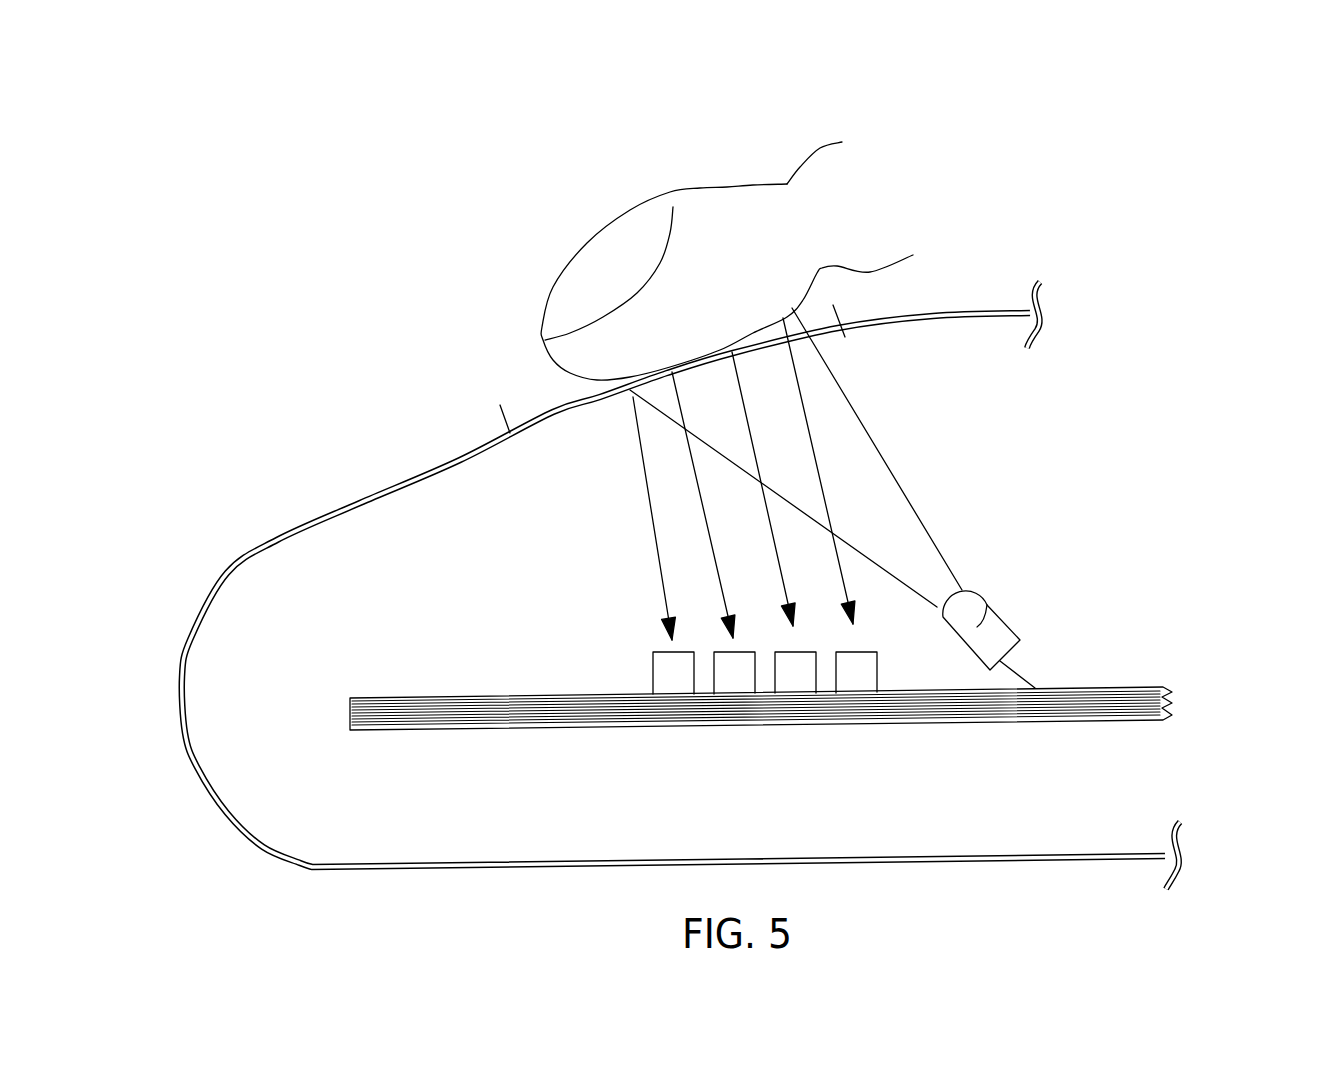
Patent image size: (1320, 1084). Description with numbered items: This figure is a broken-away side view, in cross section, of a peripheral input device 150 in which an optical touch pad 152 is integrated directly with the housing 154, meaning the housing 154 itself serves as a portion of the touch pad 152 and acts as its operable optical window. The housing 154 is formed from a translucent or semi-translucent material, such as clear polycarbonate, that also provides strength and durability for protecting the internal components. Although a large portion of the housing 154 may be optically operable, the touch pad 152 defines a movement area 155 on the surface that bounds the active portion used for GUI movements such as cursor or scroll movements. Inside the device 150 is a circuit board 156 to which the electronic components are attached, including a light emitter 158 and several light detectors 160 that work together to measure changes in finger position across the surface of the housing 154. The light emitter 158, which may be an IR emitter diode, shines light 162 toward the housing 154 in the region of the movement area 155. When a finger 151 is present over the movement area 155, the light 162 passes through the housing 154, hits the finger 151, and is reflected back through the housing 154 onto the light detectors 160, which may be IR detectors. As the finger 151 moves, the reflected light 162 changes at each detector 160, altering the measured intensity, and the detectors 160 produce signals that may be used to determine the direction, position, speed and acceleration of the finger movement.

The peripheral input device 150 is at (395, 260).
The finger 151 is at (731, 205).
The optical touch pad 152 is at (1019, 468).
The housing 154 is at (277, 540).
The movement area 155 is at (503, 422).
The circuit board 156 is at (1088, 688).
The light emitter 158 is at (997, 596).
The light detectors 160 is at (675, 672).
The light 162 is at (650, 515).